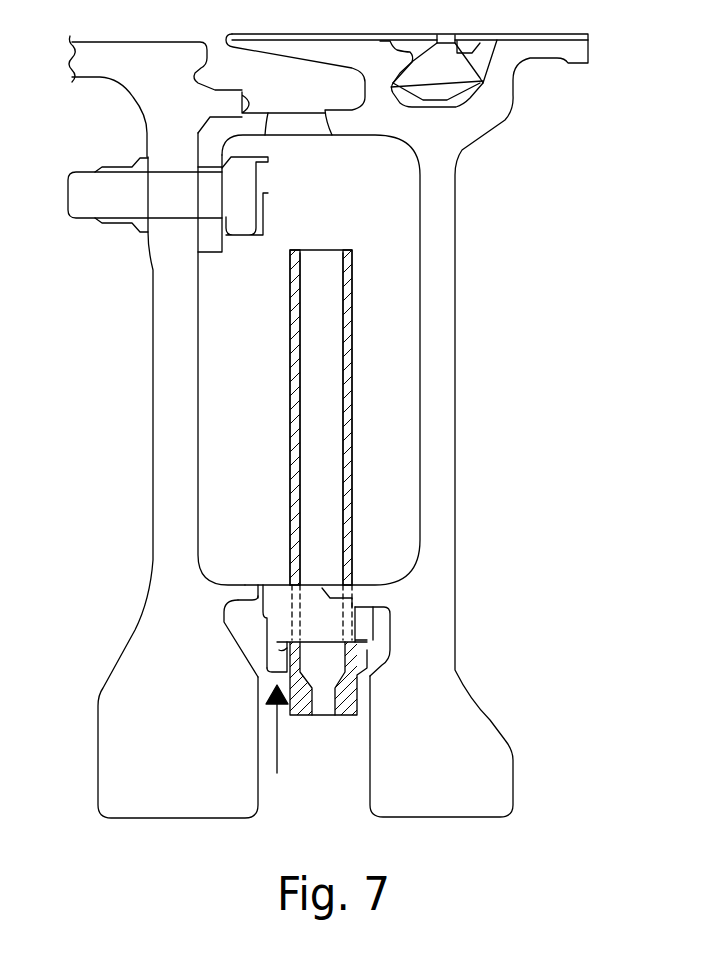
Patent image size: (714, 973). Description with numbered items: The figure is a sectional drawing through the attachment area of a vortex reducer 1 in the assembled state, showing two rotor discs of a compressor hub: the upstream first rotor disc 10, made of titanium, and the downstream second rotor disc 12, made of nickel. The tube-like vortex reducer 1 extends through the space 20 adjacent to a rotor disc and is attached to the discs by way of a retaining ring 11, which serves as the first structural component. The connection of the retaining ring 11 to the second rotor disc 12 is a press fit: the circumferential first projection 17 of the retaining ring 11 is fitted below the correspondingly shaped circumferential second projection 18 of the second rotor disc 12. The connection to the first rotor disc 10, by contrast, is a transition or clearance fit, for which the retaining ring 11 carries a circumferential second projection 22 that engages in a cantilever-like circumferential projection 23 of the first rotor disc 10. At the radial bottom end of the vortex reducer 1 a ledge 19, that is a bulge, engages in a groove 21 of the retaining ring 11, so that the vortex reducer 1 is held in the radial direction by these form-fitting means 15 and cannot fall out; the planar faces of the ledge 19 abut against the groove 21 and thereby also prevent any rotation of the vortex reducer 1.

The first rotor disc 10 is at (130, 79).
The second rotor disc 12 is at (453, 270).
The vortex reducer 1 is at (290, 340).
The space adjacent to a rotor disc of the compressor 20 is at (332, 237).
The second projection at the second rotor disc 18 is at (321, 590).
The projection at the first rotor disc 23 is at (232, 590).
The retaining ring 11 is at (269, 594).
The second projection at the retaining ring 22 is at (247, 613).
The first groove at the retaining ring 21 is at (268, 645).
The ledge at the vortex reducer 19 is at (281, 646).
The first projection at the retaining ring 17 is at (372, 630).
The form-fitting means 15 is at (281, 745).